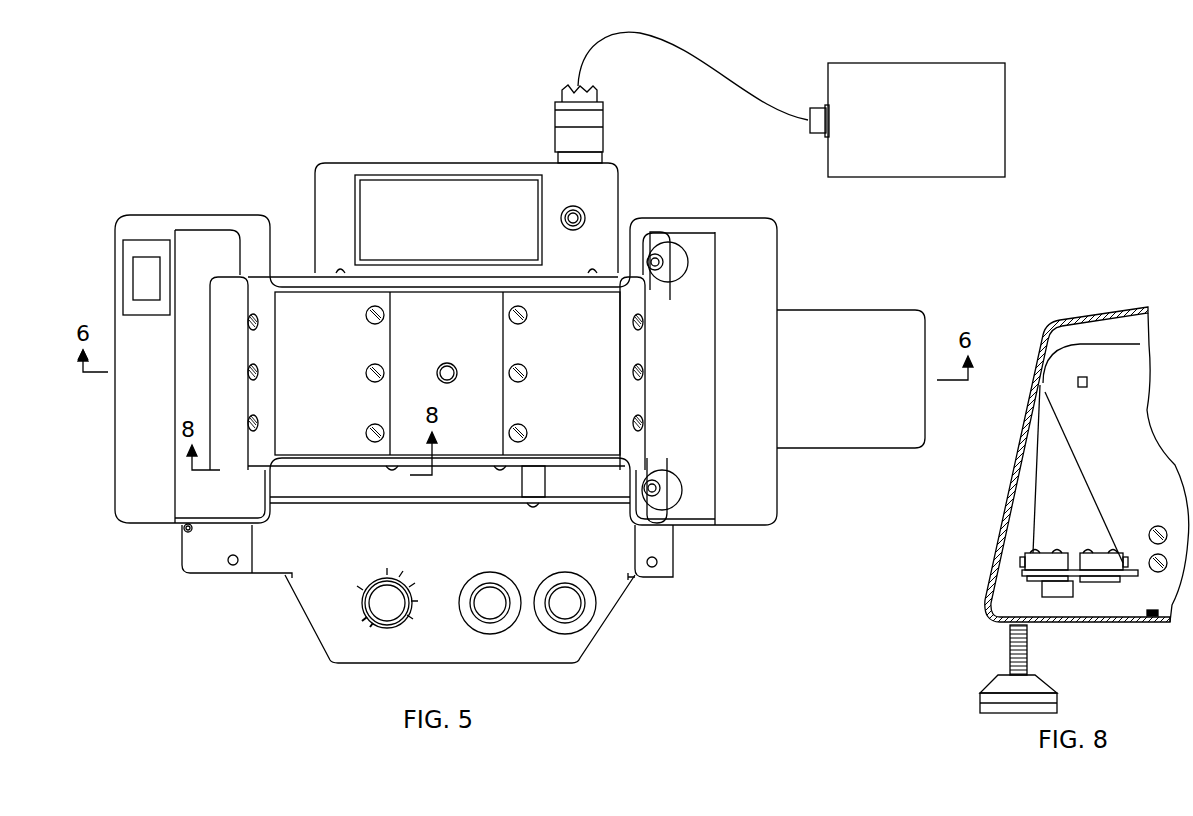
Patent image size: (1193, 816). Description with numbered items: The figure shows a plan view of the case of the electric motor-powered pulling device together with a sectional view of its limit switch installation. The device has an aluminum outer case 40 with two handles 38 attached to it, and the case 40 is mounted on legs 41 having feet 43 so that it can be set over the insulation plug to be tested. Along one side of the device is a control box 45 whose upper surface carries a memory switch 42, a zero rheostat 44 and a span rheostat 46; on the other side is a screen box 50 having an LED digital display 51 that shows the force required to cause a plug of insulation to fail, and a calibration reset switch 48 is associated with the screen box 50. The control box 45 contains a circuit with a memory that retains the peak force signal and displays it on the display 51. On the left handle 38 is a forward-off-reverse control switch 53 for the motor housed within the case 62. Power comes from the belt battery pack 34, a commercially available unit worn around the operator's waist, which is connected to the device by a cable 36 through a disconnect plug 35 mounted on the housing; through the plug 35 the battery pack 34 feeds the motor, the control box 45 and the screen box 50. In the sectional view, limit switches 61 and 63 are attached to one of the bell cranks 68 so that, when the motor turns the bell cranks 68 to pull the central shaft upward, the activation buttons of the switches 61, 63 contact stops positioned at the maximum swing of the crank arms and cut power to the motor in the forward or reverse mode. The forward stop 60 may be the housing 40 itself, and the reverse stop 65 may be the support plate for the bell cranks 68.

In FIG. 5, the belt battery pack 34 is at (927, 63).
In FIG. 5, the disconnect plug 35 is at (593, 120).
In FIG. 5, the cable 36 is at (712, 78).
In FIG. 5, the handle 38 is at (115, 463).
In FIG. 5, the outer case 40 is at (222, 575).
In FIG. 8, the outer case 40 is at (1102, 315).
In FIG. 8, the leg 41 is at (1010, 647).
In FIG. 5, the memory switch 42 is at (358, 600).
In FIG. 8, the foot 43 is at (992, 680).
In FIG. 5, the zero rheostat 44 is at (502, 630).
In FIG. 5, the control box 45 is at (468, 543).
In FIG. 5, the span rheostat 46 is at (590, 625).
In FIG. 5, the calibration reset switch 48 is at (585, 212).
In FIG. 5, the screen box 50 is at (382, 170).
In FIG. 5, the LED digital display 51 is at (487, 205).
In FIG. 5, the forward-off-reverse control switch 53 is at (145, 257).
In FIG. 8, the forward stop 60 is at (984, 592).
In FIG. 8, the limit switch 61 is at (1020, 562).
In FIG. 5, the case 62 is at (857, 308).
In FIG. 8, the limit switch 63 is at (1107, 583).
In FIG. 8, the reverse stop 65 is at (1097, 490).
In FIG. 8, the bell crank 68 is at (1040, 475).